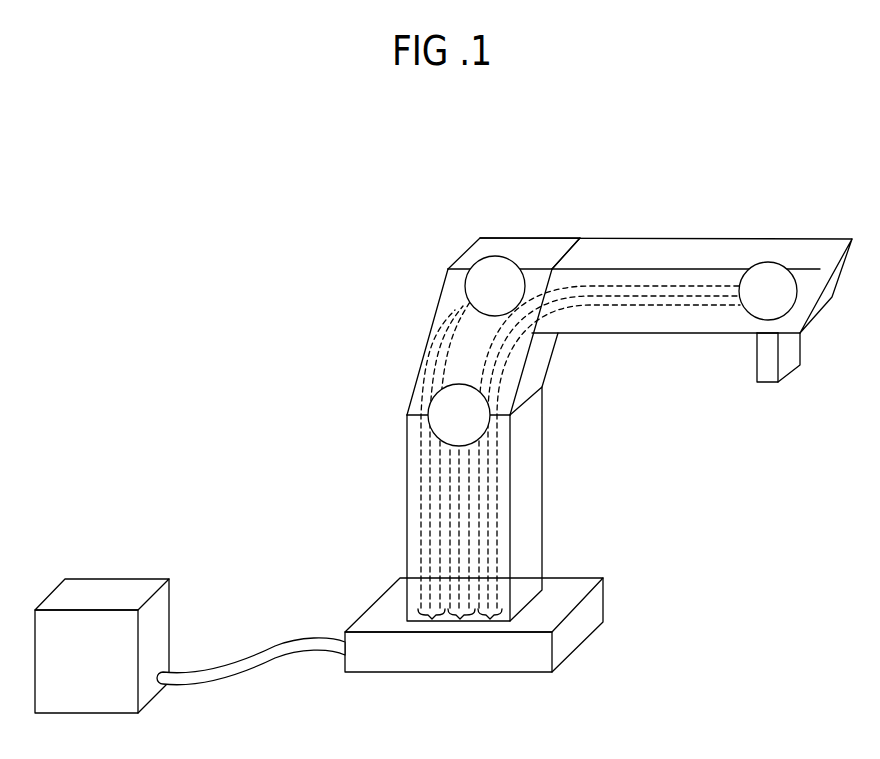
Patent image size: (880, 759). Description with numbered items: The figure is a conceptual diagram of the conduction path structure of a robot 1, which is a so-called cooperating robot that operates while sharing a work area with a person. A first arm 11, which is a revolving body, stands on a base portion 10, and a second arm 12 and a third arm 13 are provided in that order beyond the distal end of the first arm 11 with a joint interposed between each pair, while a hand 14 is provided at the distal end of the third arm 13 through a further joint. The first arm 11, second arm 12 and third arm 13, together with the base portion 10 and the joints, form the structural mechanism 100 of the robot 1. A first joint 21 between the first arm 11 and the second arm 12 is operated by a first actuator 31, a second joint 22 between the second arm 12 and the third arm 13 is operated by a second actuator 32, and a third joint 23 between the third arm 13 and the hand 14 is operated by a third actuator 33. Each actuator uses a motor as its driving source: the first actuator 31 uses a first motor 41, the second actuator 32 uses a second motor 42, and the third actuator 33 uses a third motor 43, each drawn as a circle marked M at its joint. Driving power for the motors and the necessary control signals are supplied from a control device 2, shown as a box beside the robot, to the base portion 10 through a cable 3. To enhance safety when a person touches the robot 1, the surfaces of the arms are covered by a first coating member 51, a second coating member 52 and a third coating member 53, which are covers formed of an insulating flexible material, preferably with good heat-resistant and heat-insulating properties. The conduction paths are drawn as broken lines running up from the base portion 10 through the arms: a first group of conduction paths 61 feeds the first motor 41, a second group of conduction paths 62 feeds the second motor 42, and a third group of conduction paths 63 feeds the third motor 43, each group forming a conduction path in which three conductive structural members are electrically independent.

The structural mechanism 100 is at (345, 517).
The robot 1 is at (678, 167).
The control device 2 is at (103, 583).
The cable 3 is at (202, 677).
The base portion 10 is at (362, 622).
The first arm 11 is at (407, 466).
The second arm 12 is at (517, 245).
The third arm 13 is at (672, 260).
The hand 14 is at (785, 375).
The first joint 21 is at (407, 415).
The second joint 22 is at (568, 243).
The third joint 23 is at (767, 337).
The first actuator 31 is at (459, 415).
The second actuator 32 is at (495, 286).
The third actuator 33 is at (768, 291).
The first motor 41 is at (450, 385).
The second motor 42 is at (478, 260).
The third motor 43 is at (767, 262).
The first coating member 51 is at (535, 490).
The second coating member 52 is at (535, 372).
The third coating member 53 is at (673, 323).
The first group of conduction paths 61 is at (460, 619).
The second group of conduction paths 62 is at (432, 619).
The third group of conduction paths 63 is at (490, 619).